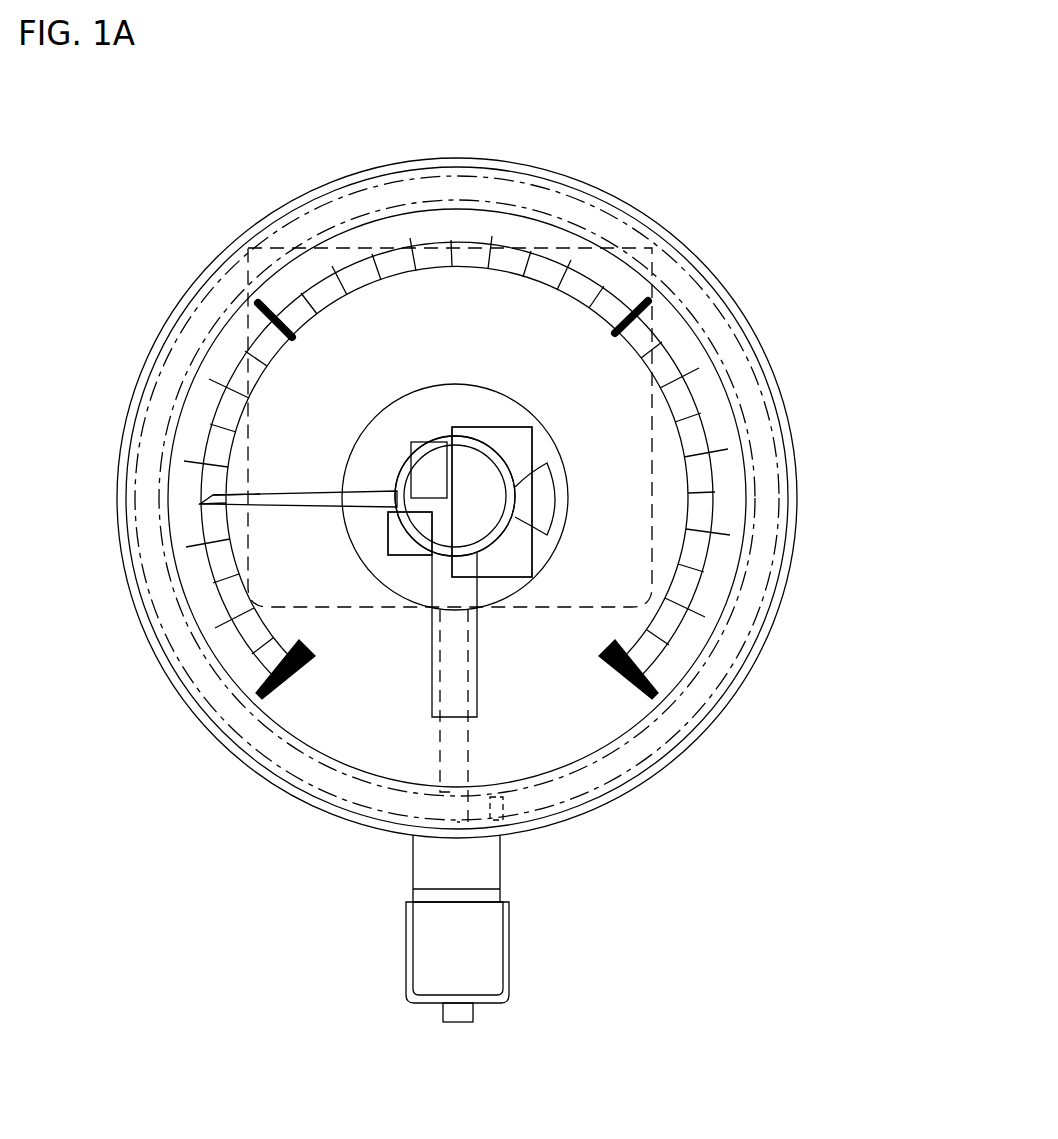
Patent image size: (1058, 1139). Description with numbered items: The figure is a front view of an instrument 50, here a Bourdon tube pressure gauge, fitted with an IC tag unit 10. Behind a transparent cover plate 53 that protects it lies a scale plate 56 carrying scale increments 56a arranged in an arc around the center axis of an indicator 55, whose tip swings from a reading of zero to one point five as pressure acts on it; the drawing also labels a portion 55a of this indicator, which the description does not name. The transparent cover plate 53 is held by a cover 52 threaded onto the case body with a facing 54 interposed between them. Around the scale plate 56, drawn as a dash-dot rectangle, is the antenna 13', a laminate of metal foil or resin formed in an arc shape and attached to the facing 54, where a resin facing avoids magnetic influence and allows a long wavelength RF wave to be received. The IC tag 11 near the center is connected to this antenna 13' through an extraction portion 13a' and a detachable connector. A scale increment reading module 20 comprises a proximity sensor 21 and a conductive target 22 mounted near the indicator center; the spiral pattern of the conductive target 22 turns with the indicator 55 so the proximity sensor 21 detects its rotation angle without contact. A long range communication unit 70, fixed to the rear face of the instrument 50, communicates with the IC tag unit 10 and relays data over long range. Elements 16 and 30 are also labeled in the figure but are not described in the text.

The instrument 50 is at (796, 353).
The cover 52 is at (778, 616).
The long range communication unit 70 is at (660, 224).
The facing 54 is at (747, 500).
The antenna 13' is at (518, 415).
The scale plate 56 is at (538, 318).
The scale increments 56a is at (213, 407).
The indicator 55 is at (338, 497).
The pointer tip 55a is at (285, 506).
The IC tag unit 10 is at (394, 396).
The link 16 is at (457, 386).
The scale increment reading module 20 is at (758, 845).
The proximity sensor 21 is at (492, 583).
The conductive target 22 is at (485, 513).
The transparent cover plate 53 is at (392, 762).
The IC tag 11 is at (403, 557).
The pressure inlet pipe (alternative) 30 is at (403, 557).
The extraction portion 13a' is at (560, 889).